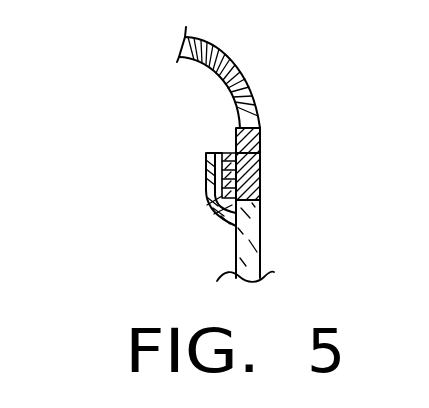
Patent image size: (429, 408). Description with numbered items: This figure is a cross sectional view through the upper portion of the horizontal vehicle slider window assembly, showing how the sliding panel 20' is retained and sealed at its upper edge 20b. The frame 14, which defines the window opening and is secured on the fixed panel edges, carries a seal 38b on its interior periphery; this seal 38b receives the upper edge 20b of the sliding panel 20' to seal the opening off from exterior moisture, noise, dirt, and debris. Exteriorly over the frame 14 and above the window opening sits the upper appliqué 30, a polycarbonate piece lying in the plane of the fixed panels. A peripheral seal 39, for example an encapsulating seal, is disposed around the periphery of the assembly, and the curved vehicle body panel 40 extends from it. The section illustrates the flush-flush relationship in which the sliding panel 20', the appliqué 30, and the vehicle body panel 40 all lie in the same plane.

The vehicle body panel 40 is at (220, 75).
The peripheral seal 39 is at (265, 138).
The upper appliqué 30 is at (260, 172).
The sliding panel 20' is at (282, 241).
The seal 38b is at (208, 155).
The upper edge 20b is at (210, 219).
The frame 14 is at (227, 153).